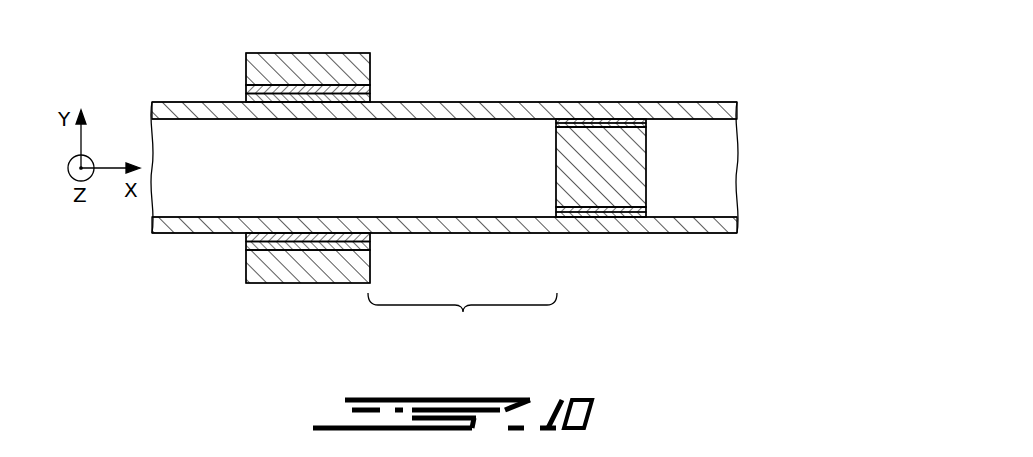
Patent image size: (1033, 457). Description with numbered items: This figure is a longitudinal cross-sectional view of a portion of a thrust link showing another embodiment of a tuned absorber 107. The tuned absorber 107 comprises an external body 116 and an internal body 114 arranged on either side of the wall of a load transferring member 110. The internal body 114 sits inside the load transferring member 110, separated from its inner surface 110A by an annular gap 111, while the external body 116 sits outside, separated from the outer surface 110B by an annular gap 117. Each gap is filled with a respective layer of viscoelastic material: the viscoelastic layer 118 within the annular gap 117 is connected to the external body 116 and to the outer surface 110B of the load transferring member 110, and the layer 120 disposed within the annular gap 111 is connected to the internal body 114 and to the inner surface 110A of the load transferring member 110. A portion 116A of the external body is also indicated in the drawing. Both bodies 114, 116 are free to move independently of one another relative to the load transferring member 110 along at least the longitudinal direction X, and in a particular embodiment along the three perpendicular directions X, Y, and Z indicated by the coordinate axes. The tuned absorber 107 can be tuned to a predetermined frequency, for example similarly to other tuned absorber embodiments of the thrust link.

The tuned absorber 107 is at (462, 321).
The load transferring member 110 is at (480, 162).
The inner surface of the load transferring member 110A is at (345, 119).
The outer surface of the load transferring member 110B is at (640, 233).
The annular gap 111 is at (547, 123).
The internal body 114 is at (556, 176).
The external body 116 is at (314, 153).
The outer electrode portion 116A is at (281, 85).
The annular gap 117 is at (392, 93).
The viscoelastic layer 118 is at (246, 93).
The layer of viscoelastic material 120 is at (646, 212).